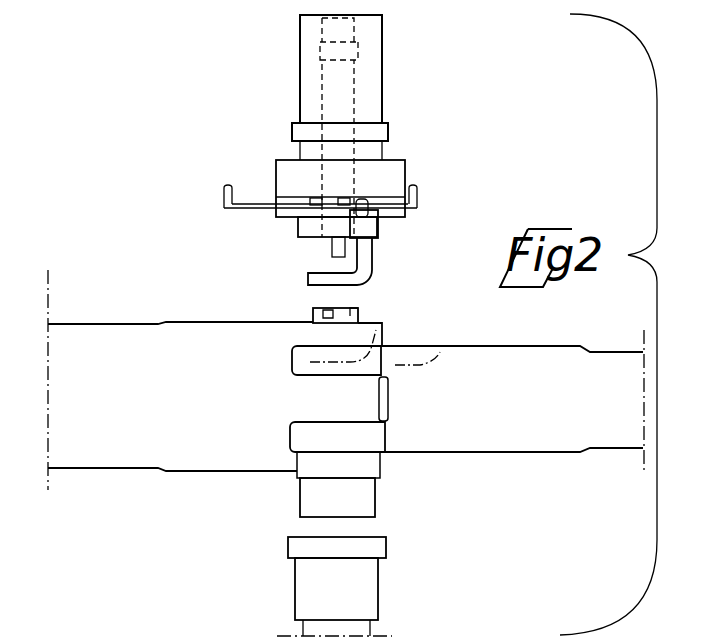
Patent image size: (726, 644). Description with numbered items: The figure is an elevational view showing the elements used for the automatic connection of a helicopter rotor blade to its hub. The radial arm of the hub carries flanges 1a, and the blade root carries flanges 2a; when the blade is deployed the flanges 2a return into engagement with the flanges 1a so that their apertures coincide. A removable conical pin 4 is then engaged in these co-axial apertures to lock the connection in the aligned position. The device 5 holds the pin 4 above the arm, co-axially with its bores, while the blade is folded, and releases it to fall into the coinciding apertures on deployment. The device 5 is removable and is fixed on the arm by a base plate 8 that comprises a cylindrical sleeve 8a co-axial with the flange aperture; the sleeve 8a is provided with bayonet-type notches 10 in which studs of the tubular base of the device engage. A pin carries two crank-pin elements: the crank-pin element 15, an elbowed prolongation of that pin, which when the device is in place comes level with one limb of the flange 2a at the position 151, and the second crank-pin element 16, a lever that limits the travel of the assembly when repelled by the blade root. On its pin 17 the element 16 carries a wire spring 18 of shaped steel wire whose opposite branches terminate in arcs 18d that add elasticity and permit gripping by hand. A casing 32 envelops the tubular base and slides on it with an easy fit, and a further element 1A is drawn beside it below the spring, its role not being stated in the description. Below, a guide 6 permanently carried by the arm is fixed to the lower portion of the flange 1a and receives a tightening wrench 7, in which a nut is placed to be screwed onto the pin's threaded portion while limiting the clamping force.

The removable pin 4 is at (338, 105).
The device 5 is at (286, 134).
The pin 17 is at (312, 200).
The wire spring 18 is at (278, 215).
The arcs 18d is at (420, 183).
The casing 32 is at (347, 198).
The second crank-pin element 16 is at (362, 200).
The lower block 1A is at (383, 222).
The crank-pin element 15 is at (332, 282).
The base plate 8 is at (378, 315).
The bayonet notches 10 is at (326, 316).
The cylindrical sleeve 8a is at (357, 310).
The flanges of the radial arm 1a is at (310, 398).
The flanges of the blade root 2a is at (362, 347).
The position of the crank-pin element 151 is at (436, 356).
The guide 6 is at (355, 506).
The tightening wrench 7 is at (372, 590).